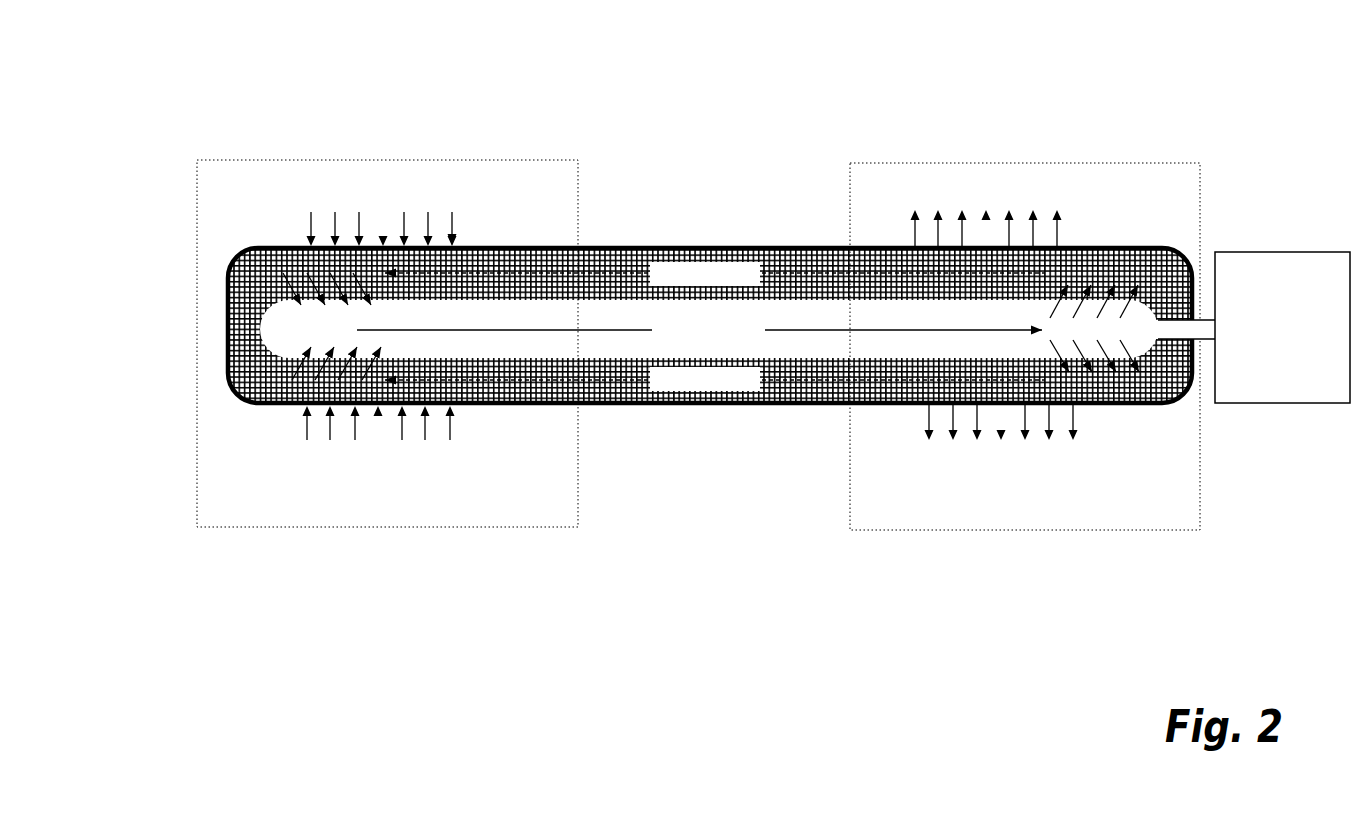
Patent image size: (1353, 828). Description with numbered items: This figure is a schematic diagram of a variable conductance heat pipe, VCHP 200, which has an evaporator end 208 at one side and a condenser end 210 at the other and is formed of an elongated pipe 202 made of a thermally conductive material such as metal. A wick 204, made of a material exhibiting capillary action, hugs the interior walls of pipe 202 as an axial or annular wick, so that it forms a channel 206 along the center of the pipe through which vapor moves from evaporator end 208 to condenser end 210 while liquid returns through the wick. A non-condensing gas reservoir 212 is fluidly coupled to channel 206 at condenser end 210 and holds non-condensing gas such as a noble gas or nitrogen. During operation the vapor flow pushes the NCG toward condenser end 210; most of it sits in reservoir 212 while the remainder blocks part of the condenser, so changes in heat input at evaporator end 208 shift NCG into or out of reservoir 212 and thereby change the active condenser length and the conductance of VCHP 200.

The variable conductance heat pipe 200 is at (710, 263).
The elongated pipe 202 is at (664, 247).
The wick 204 is at (830, 402).
The channel 206 is at (926, 355).
The evaporator end 208 is at (212, 307).
The condenser end 210 is at (1216, 430).
The non-condensing gas reservoir 212 is at (1266, 361).